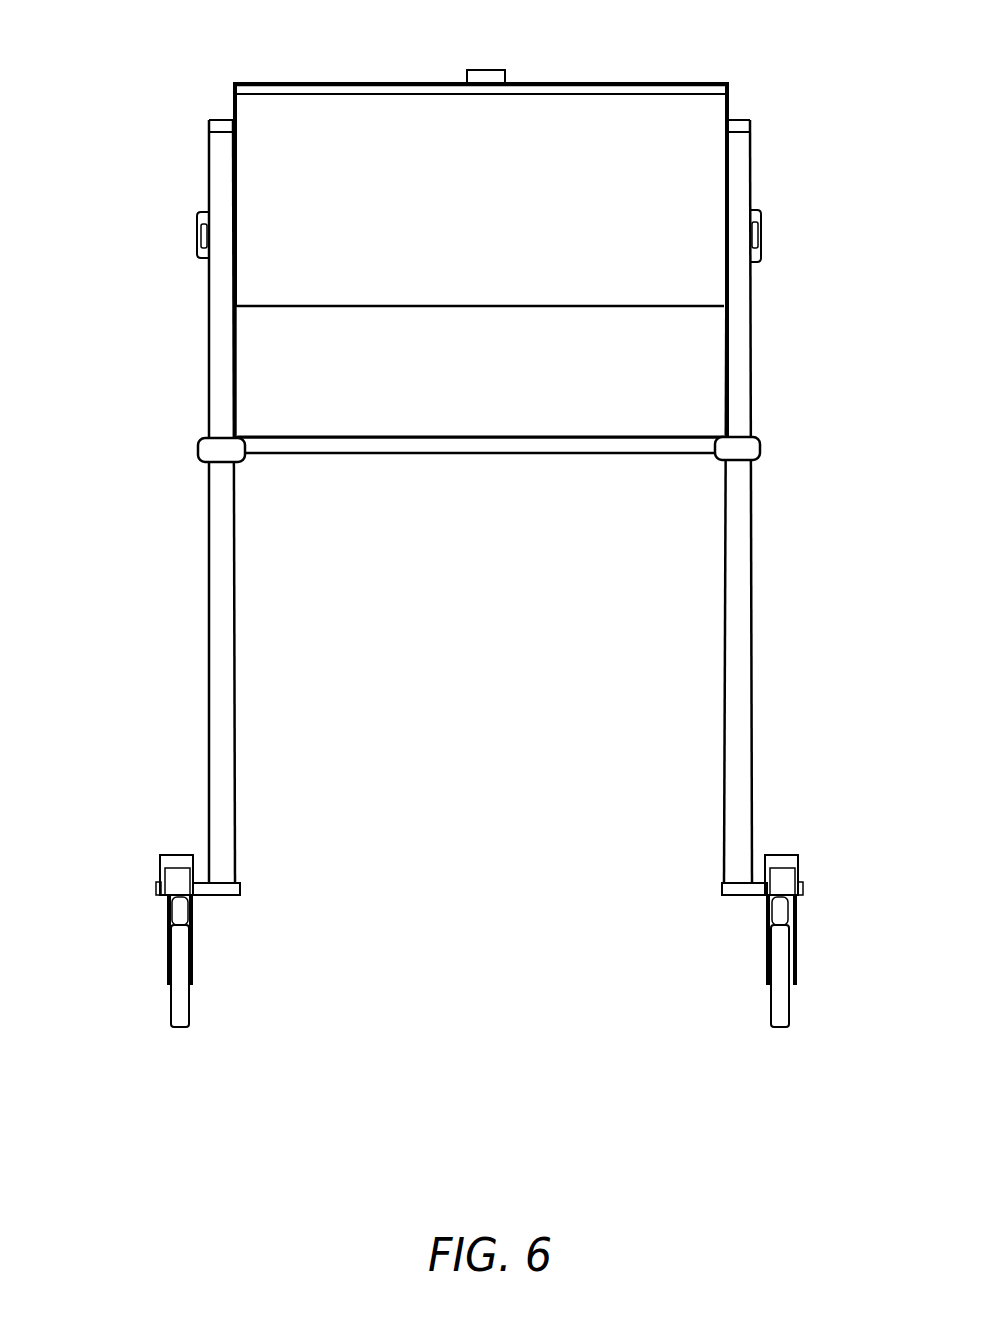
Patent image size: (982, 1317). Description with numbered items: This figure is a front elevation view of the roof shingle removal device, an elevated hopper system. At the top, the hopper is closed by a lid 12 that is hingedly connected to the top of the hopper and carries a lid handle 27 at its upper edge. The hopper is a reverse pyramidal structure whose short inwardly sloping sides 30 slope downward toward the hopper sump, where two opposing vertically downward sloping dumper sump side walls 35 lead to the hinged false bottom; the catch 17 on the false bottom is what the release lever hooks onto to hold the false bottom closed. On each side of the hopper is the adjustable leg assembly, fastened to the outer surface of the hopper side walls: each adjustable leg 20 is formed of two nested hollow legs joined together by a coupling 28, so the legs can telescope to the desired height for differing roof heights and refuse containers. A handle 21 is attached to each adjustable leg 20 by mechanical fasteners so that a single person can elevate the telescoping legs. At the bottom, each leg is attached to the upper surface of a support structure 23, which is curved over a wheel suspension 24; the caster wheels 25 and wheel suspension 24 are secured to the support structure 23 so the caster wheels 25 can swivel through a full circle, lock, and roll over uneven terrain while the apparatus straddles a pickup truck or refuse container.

The lid 12 is at (710, 86).
The catch 17 is at (514, 440).
The adjustable legs 20 is at (212, 568).
The handle 21 is at (205, 252).
The support structure 23 is at (240, 895).
The wheel suspension 24 is at (178, 910).
The caster wheels 25 is at (190, 990).
The lid handle 27 is at (489, 78).
The coupling 28 is at (213, 450).
The short inwardly sloping sides 30 is at (707, 108).
The dumper sump side walls 35 is at (712, 358).